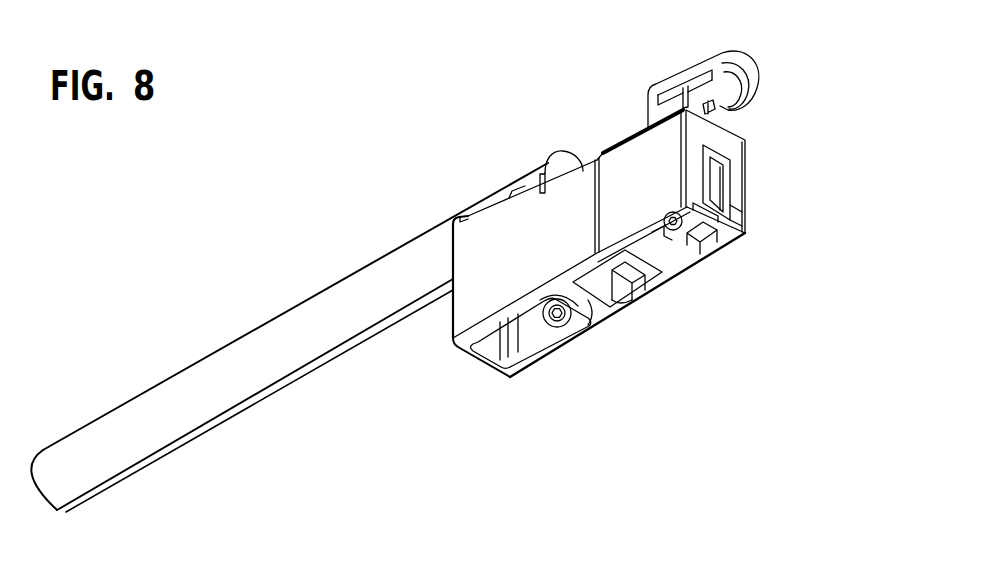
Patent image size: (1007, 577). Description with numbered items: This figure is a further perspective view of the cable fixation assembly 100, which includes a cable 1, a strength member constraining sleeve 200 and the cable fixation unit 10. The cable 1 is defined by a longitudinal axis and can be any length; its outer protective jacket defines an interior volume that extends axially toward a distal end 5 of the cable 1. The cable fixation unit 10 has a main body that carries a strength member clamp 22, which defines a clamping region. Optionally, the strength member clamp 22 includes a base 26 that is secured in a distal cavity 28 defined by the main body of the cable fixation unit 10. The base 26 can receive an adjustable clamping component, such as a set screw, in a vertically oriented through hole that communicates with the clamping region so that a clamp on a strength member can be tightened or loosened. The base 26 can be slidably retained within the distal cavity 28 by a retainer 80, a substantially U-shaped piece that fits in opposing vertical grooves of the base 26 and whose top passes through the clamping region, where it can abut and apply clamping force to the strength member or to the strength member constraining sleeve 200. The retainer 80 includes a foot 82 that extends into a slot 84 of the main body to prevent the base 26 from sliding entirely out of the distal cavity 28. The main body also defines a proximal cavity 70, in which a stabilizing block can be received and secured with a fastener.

The cable fixation assembly 100 is at (372, 137).
The cable 1 is at (193, 375).
The cable fixation unit 10 is at (588, 108).
The distal end 5 is at (563, 150).
The strength member clamp 22 is at (700, 67).
The strength member constraining sleeve 200 is at (707, 110).
The retainer 80 is at (712, 185).
The slot 84 is at (725, 198).
The foot 82 is at (747, 232).
The proximal cavity 70 is at (488, 345).
The distal cavity 28 is at (657, 253).
The base 26 is at (690, 250).